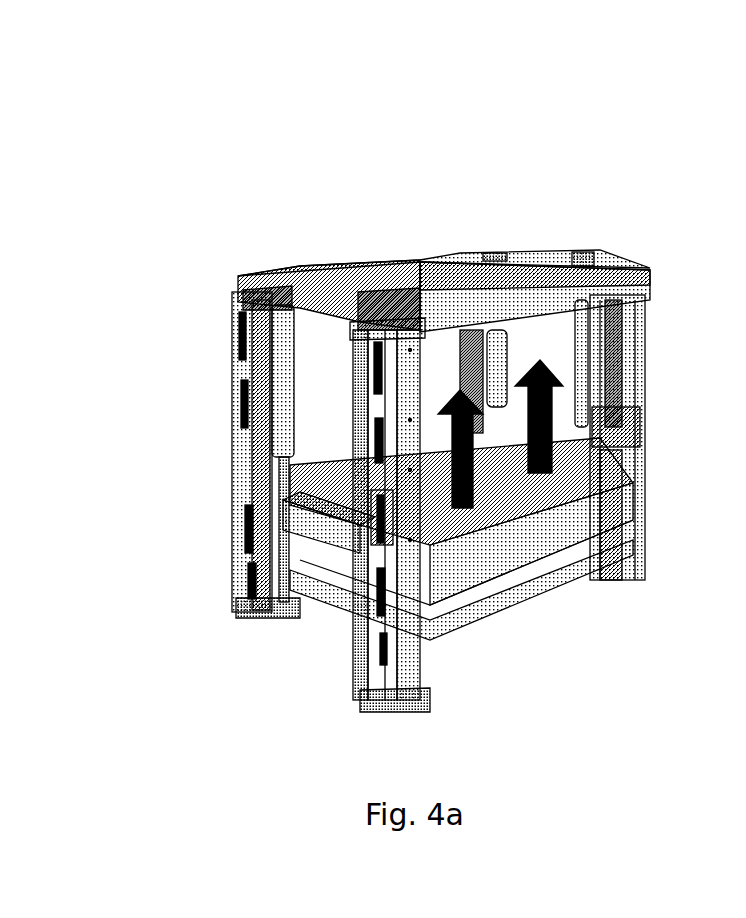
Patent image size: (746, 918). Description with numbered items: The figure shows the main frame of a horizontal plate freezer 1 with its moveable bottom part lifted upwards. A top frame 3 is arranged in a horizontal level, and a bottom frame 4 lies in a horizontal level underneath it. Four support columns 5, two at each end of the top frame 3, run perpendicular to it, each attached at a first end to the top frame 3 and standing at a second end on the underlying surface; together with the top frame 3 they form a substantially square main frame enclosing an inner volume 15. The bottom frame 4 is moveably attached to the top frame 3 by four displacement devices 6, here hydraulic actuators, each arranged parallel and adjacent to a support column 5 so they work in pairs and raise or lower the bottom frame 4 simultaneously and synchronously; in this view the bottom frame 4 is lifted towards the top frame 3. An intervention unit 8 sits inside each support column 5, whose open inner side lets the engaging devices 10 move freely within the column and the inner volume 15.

The horizontal plate freezer 1 is at (364, 245).
The top frame 3 is at (490, 272).
The bottom frame 4 is at (517, 553).
The support column 5 is at (379, 497).
The displacement device 6 is at (275, 347).
The intervention unit 8 is at (625, 352).
The engaging device 10 is at (625, 428).
The inner volume 15 is at (328, 399).